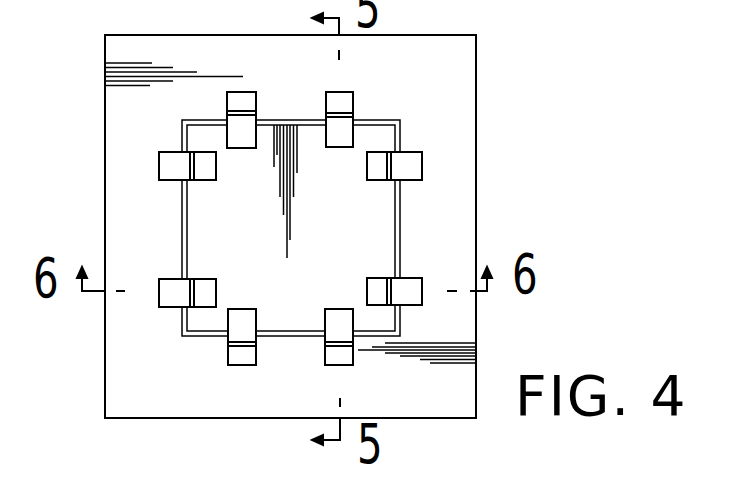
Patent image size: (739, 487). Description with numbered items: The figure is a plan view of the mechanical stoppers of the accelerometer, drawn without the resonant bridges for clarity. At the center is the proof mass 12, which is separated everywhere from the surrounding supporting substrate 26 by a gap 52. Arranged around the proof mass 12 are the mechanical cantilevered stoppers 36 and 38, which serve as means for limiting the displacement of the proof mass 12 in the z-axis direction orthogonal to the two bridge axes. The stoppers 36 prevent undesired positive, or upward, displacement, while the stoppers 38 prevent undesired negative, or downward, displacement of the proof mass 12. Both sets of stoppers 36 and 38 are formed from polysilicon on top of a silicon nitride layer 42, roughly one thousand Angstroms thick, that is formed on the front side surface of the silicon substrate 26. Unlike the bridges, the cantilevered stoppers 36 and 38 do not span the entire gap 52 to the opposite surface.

The proof mass 12 is at (342, 168).
The supporting substrate 26 is at (438, 313).
The mechanical cantilevered stopper 36 is at (338, 102).
The mechanical cantilevered stopper 38 is at (170, 173).
The silicon nitride layer 42 is at (112, 352).
The gap 52 is at (400, 140).